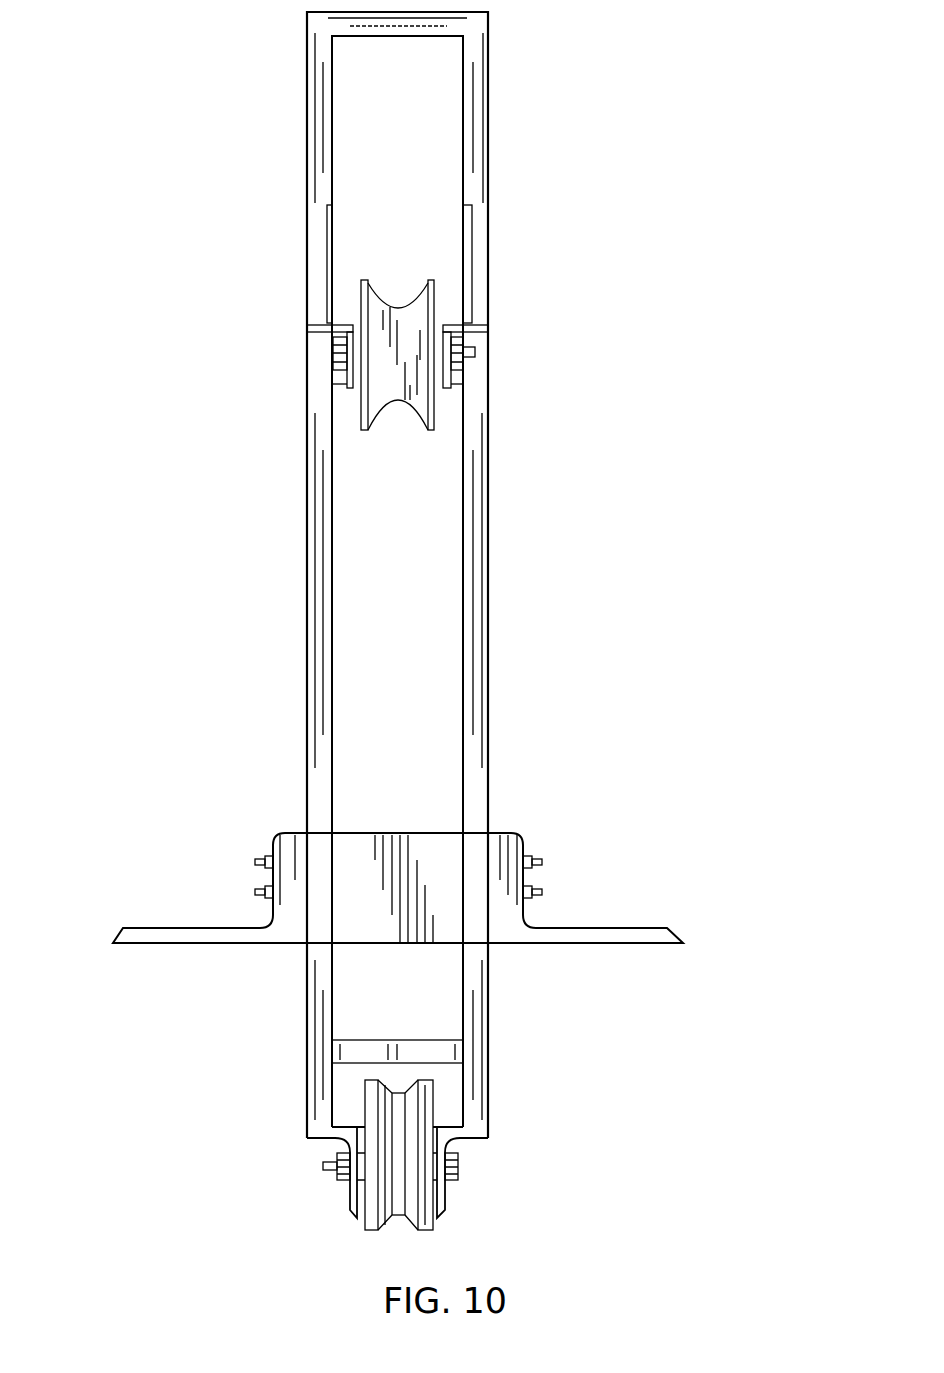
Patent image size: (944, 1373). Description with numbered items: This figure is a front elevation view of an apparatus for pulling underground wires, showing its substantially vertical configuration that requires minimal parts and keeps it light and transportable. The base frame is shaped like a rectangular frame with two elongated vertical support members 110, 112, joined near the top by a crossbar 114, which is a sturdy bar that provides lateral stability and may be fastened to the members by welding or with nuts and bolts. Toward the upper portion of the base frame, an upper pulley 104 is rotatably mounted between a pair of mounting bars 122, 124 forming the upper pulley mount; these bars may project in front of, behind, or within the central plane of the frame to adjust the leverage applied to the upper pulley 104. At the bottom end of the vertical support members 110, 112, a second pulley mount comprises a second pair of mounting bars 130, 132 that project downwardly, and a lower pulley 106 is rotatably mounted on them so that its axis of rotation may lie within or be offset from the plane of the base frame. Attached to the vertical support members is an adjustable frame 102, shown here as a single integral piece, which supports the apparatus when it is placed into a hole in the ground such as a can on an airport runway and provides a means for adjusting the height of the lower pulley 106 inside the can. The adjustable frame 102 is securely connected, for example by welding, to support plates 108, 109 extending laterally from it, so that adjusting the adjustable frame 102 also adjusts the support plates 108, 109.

The adjustable frame 102 is at (490, 853).
The upper pulley 104 is at (401, 388).
The lower pulley 106 is at (370, 1222).
The support plate 108 is at (683, 935).
The support plate 109 is at (120, 932).
The vertical support member 110 is at (320, 101).
The vertical support member 112 is at (483, 115).
The crossbar 114 is at (455, 23).
The mounting bar 122 is at (487, 330).
The mounting bar 124 is at (316, 329).
The mounting bar 130 is at (448, 1196).
The mounting bar 132 is at (348, 1196).